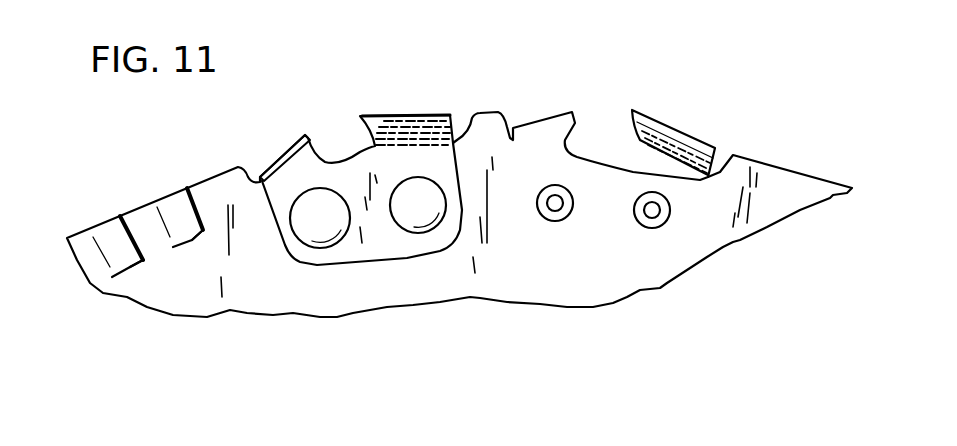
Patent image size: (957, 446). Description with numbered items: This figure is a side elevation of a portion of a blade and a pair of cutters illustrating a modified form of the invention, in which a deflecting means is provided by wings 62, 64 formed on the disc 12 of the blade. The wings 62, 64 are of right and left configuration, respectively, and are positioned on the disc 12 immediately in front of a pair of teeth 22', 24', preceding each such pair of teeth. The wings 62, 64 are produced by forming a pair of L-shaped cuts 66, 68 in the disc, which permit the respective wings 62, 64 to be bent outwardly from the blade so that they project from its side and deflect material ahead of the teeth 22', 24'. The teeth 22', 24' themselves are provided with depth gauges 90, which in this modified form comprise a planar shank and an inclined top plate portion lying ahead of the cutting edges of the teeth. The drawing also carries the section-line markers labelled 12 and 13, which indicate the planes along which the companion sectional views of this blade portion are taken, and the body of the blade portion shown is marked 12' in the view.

The chain link body 12' is at (397, 210).
The tooth 22' is at (678, 116).
The tooth 24' is at (406, 92).
The wing 62 is at (108, 233).
The wing 64 is at (174, 202).
The L-shaped cut 66 is at (131, 268).
The L-shaped cut 68 is at (192, 240).
The depth gauge 90 is at (285, 140).
The disc 12 is at (276, 267).
The section line 13- 13 is at (92, 99).